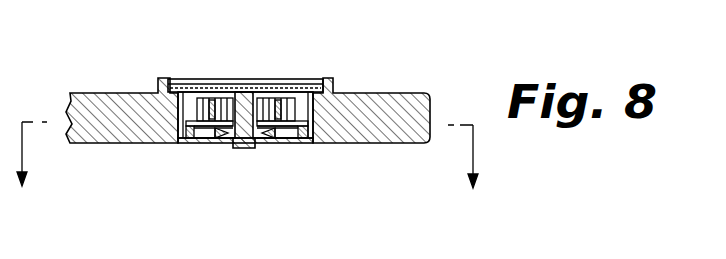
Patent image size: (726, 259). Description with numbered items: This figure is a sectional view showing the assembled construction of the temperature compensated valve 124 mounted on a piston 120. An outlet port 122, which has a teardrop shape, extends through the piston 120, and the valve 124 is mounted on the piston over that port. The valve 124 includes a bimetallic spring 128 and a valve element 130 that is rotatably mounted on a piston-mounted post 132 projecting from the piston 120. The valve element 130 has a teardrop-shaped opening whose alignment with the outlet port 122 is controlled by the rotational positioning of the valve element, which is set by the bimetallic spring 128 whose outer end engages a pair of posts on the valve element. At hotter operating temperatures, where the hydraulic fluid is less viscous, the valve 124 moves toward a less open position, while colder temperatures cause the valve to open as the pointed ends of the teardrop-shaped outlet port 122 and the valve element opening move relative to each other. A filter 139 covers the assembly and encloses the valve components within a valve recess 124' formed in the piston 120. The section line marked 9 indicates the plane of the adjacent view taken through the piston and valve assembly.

The section line 9- 9 is at (246, 171).
The piston 120 is at (430, 101).
The outlet port 122 is at (206, 142).
The temperature compensated valve 124 is at (236, 181).
The valve recess 124' is at (220, 69).
The bimetallic spring 128 is at (287, 89).
The valve element 130 is at (188, 140).
The piston-mounted post 132 is at (254, 90).
The filter 139 is at (220, 89).